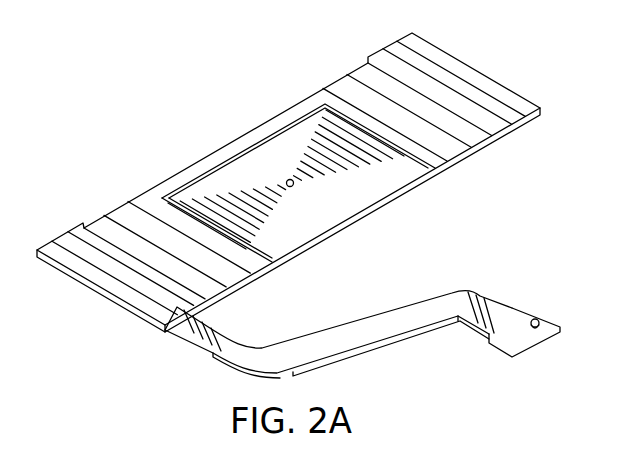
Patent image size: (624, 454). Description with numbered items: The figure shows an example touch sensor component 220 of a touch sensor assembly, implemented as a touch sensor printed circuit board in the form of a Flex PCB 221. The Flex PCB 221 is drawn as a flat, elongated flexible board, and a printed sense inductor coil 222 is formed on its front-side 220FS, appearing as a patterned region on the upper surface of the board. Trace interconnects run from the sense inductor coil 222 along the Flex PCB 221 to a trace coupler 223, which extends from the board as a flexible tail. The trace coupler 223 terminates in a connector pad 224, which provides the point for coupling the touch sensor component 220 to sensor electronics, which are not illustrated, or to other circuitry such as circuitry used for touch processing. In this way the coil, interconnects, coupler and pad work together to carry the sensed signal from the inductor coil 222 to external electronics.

The touch sensor component 220 is at (447, 234).
The front-side 220FS is at (273, 148).
The Flex PCB 221 is at (469, 77).
The printed sense inductor coil 222 is at (218, 193).
The trace coupler 223 is at (354, 332).
The connector pad 224 is at (530, 317).